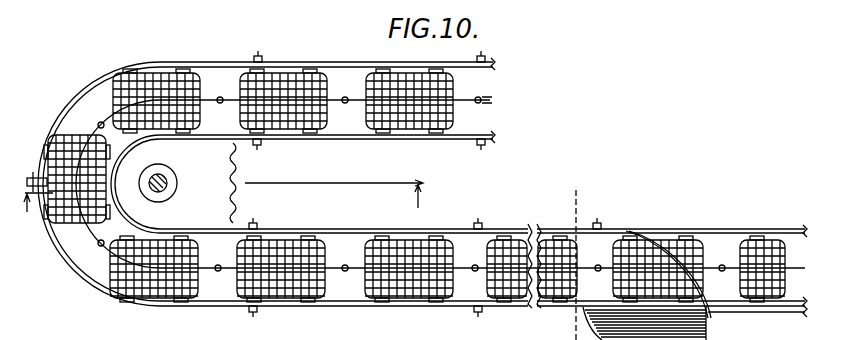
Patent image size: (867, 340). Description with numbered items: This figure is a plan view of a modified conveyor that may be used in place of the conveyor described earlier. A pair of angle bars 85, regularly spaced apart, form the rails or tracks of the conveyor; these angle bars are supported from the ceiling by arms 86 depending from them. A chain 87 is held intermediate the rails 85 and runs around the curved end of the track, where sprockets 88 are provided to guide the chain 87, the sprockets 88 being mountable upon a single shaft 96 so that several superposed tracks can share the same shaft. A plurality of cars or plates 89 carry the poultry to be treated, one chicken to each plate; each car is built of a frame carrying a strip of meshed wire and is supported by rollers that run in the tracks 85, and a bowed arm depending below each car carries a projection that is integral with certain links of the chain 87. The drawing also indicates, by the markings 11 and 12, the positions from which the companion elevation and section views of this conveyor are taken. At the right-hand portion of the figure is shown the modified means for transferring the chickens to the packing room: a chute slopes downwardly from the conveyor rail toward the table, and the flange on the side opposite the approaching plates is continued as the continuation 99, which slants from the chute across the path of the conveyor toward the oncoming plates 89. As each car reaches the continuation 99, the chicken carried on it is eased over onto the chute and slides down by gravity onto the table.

The conveyor section 11 is at (226, 208).
The section line 12 is at (571, 197).
The angle bars 85 is at (350, 60).
The arms 86 is at (258, 58).
The chain 87 is at (222, 97).
The sprockets 88 is at (326, 183).
The cars or plates 89 is at (157, 74).
The shaft 96 is at (177, 183).
The continuation 99 is at (672, 248).